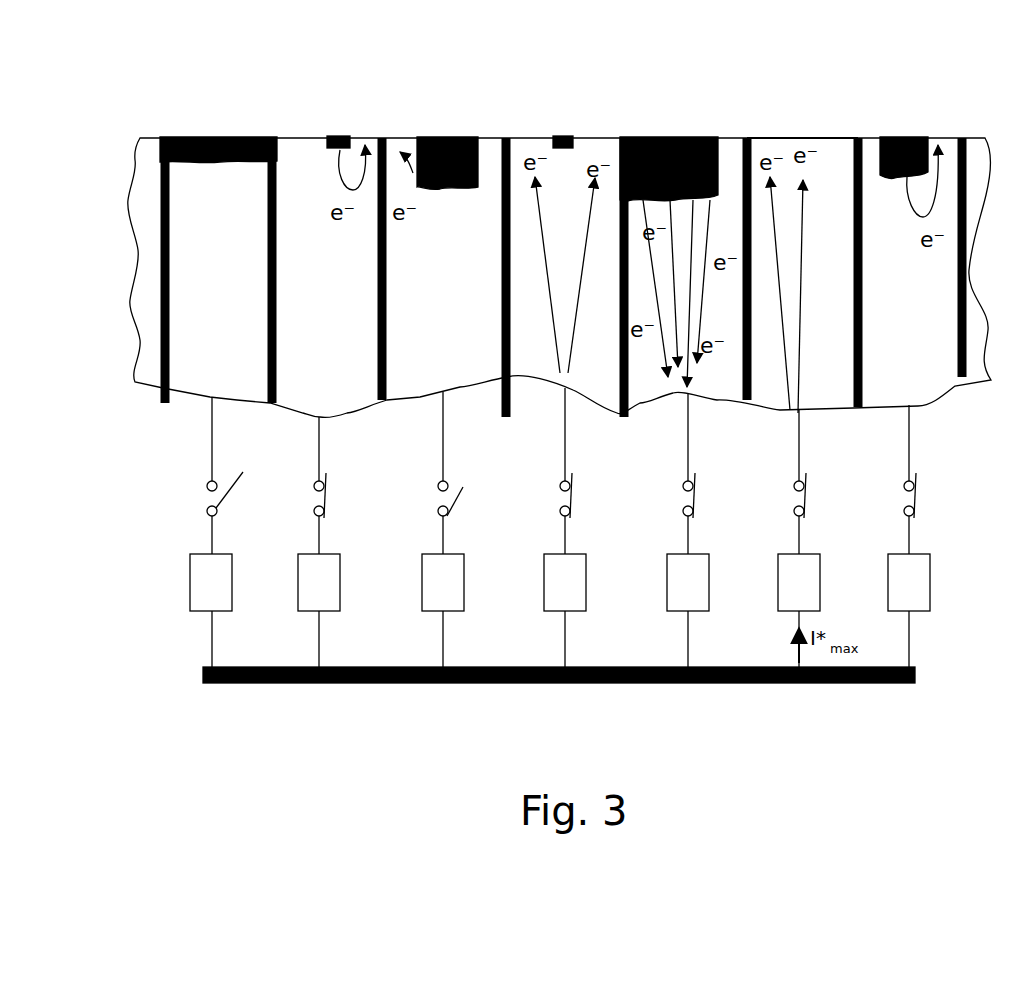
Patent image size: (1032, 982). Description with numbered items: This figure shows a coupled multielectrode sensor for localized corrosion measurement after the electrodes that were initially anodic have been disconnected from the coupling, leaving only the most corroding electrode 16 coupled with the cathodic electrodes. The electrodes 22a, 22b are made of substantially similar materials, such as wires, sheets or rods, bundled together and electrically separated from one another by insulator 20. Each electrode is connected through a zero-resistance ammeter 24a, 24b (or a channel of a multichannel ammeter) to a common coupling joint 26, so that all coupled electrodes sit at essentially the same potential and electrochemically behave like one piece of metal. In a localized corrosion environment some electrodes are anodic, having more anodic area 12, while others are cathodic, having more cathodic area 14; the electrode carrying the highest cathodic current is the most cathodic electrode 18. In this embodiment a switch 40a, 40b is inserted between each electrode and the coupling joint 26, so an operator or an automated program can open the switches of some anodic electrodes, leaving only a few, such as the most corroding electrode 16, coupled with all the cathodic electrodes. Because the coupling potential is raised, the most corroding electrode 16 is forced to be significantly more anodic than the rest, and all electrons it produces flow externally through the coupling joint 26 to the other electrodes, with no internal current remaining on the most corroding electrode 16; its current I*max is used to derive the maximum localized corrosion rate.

The anodic area 12 is at (230, 134).
The cathodic area 14 is at (317, 135).
The most corroding electrode 16 is at (710, 117).
The most cathodic electrode 18 is at (833, 123).
The insulator 20 is at (967, 137).
The electrode 22a is at (193, 412).
The electrode 22b is at (933, 410).
The zero-resistance ammeter 24a is at (193, 588).
The zero-resistance ammeter 24b is at (942, 585).
The coupling joint 26 is at (647, 687).
The switch 40a is at (202, 497).
The switch 40b is at (927, 503).